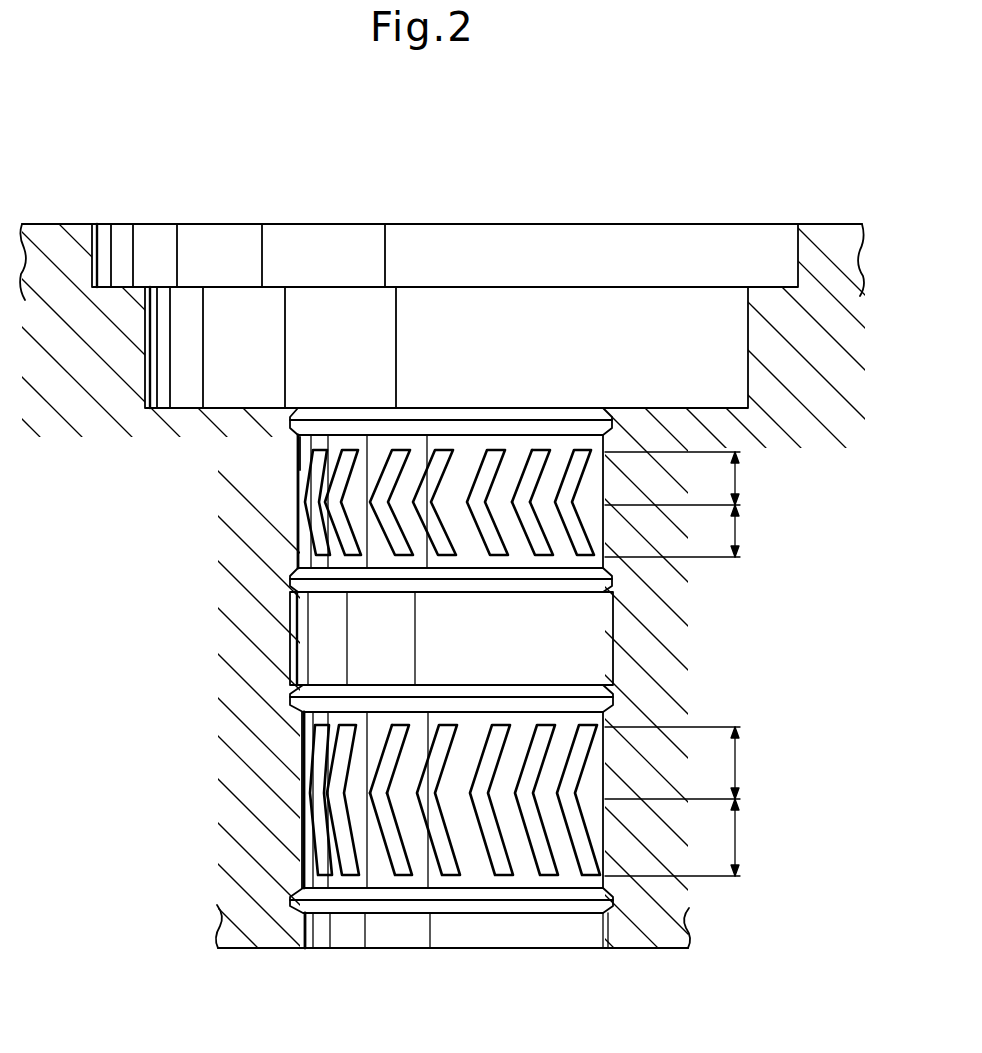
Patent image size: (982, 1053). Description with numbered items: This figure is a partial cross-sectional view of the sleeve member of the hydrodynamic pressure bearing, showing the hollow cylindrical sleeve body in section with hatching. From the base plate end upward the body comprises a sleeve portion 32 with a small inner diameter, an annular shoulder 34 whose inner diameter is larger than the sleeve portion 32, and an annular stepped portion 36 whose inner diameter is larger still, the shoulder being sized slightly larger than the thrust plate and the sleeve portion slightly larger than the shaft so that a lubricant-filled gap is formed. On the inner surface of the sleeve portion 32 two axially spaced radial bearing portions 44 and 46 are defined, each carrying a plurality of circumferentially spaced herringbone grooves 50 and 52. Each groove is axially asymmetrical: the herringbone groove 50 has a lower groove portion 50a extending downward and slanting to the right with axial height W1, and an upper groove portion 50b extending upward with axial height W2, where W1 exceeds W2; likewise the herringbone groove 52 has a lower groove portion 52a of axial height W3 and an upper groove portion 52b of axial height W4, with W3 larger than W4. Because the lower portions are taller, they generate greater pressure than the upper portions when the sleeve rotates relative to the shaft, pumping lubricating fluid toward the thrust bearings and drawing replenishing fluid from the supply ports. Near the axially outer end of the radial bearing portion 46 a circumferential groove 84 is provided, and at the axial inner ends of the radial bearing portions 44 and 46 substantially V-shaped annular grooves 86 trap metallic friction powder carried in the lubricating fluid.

The sleeve portion 32 is at (612, 648).
The annular shoulder 34 is at (615, 308).
The annular stepped portion 36 is at (738, 232).
The radial bearing portion 44 is at (293, 798).
The radial bearing portion 46 is at (293, 527).
The herringbone groove 50 is at (451, 829).
The lower groove portion 50a is at (397, 855).
The upper groove portion 50b is at (400, 743).
The herringbone groove 52 is at (464, 486).
The lower groove portion 52a is at (550, 555).
The upper groove portion 52b is at (539, 450).
The circumferential groove 84 is at (452, 420).
The annular grooves 86 is at (333, 580).
The axial height of lower groove portion 50a W1 is at (740, 836).
The axial height of upper groove portion 50b W2 is at (740, 768).
The axial height of lower groove portion 52a W3 is at (740, 537).
The axial height of upper groove portion 52b W4 is at (740, 485).